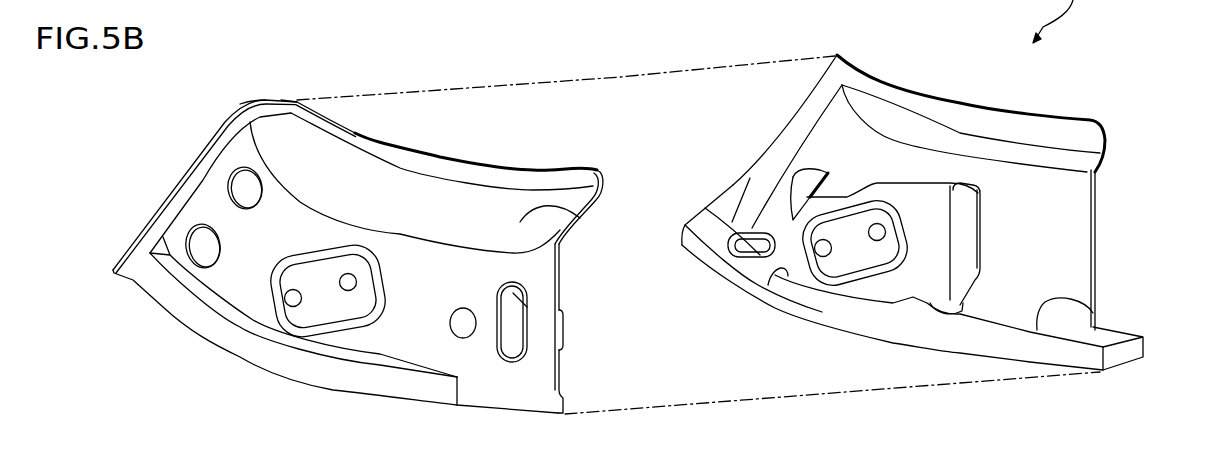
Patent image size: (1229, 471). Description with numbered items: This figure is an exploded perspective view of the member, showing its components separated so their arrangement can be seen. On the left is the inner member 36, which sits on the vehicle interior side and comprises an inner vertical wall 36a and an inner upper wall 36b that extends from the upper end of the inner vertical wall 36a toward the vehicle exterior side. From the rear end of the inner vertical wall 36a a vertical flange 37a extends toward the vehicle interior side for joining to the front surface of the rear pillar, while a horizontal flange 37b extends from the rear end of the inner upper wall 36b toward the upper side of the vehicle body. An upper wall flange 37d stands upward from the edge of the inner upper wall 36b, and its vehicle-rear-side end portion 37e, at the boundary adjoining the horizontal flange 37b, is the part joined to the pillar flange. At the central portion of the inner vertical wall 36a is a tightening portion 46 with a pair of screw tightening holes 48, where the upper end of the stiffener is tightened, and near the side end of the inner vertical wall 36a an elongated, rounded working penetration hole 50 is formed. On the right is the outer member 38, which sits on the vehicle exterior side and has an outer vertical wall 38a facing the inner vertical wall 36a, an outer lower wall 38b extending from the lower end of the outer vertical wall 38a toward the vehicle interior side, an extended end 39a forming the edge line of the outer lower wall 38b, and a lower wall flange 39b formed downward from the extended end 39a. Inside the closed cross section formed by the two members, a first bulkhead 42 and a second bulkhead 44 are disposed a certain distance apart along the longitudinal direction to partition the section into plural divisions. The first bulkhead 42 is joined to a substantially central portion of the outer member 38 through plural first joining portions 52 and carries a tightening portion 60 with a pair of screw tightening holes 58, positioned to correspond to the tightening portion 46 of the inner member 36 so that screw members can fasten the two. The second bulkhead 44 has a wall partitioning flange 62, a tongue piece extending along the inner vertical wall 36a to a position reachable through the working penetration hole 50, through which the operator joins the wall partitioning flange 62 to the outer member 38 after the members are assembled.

The inner member 36 is at (199, 336).
The inner vertical wall 36a is at (417, 303).
The inner upper wall 36b is at (585, 218).
The vertical flange 37a is at (178, 203).
The horizontal flange 37b is at (263, 112).
The upper wall flange 37d is at (450, 166).
The vehicle-rear-side end portion 37e is at (306, 118).
The outer member 38 is at (1104, 237).
The outer vertical wall 38a is at (1033, 190).
The outer lower wall 38b is at (768, 285).
The extended end 39a is at (1097, 315).
The lower wall flange 39b is at (1000, 347).
The first bulkhead 42 is at (883, 179).
The second bulkhead 44 is at (566, 345).
The tightening portion 46 is at (290, 306).
The screw tightening holes 48 is at (348, 290).
The working penetration hole 50 is at (520, 290).
The first joining portions 52 is at (800, 186).
The screw tightening holes 58 is at (873, 237).
The tightening portion 60 is at (803, 180).
The wall partitioning flange 62 is at (566, 331).